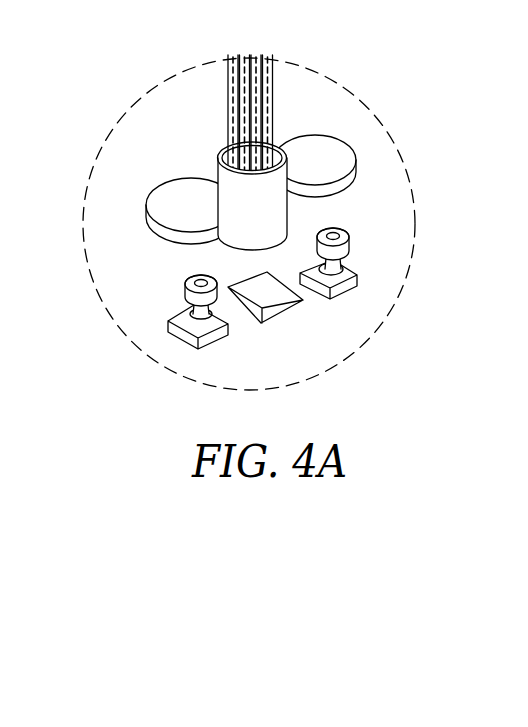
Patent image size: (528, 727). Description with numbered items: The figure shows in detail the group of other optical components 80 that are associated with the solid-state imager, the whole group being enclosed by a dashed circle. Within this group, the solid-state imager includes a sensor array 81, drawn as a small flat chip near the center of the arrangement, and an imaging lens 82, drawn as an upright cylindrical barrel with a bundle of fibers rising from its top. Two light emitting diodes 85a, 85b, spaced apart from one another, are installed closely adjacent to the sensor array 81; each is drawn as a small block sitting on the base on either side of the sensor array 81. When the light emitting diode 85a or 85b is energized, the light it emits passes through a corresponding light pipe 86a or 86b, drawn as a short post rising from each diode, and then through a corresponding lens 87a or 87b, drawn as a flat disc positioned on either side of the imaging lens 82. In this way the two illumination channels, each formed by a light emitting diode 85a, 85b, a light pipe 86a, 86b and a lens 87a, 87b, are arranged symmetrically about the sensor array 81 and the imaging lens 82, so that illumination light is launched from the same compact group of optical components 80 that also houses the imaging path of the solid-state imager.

The group of other optical components 80 is at (160, 80).
The sensor array 81 is at (267, 288).
The imaging lens 82 is at (219, 175).
The light emitting diode 85a is at (170, 315).
The light emitting diode 85b is at (358, 268).
The light pipe 86a is at (188, 287).
The light pipe 86b is at (349, 238).
The lens 87a is at (168, 205).
The lens 87b is at (325, 128).